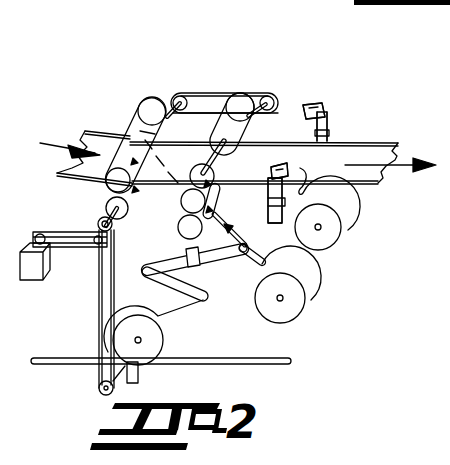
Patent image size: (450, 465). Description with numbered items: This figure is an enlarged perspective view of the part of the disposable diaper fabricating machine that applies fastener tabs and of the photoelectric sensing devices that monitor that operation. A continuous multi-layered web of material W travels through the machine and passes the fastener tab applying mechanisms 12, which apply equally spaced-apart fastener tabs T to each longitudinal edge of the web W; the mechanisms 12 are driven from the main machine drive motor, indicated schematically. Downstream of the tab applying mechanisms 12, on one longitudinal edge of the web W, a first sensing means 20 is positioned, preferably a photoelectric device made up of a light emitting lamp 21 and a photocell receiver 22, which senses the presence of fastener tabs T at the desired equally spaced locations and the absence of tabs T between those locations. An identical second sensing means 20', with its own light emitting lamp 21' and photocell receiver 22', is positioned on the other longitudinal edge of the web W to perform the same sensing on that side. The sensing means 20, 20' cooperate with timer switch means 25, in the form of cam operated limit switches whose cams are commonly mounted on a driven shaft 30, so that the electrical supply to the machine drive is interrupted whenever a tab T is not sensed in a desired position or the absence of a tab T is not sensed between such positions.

The fastener tab applying mechanisms 12 is at (252, 84).
The first sensing means 20 is at (245, 205).
The second sensing means 20' is at (314, 93).
The light emitting lamp 21 is at (276, 213).
The light emitting lamp 21' is at (347, 121).
The photocell receiver 22 is at (284, 163).
The photocell receiver 22' is at (341, 95).
The timer switch means 25 is at (52, 274).
The driven shaft 30 is at (40, 234).
The web of material W is at (112, 136).
The fastener tabs T is at (242, 163).